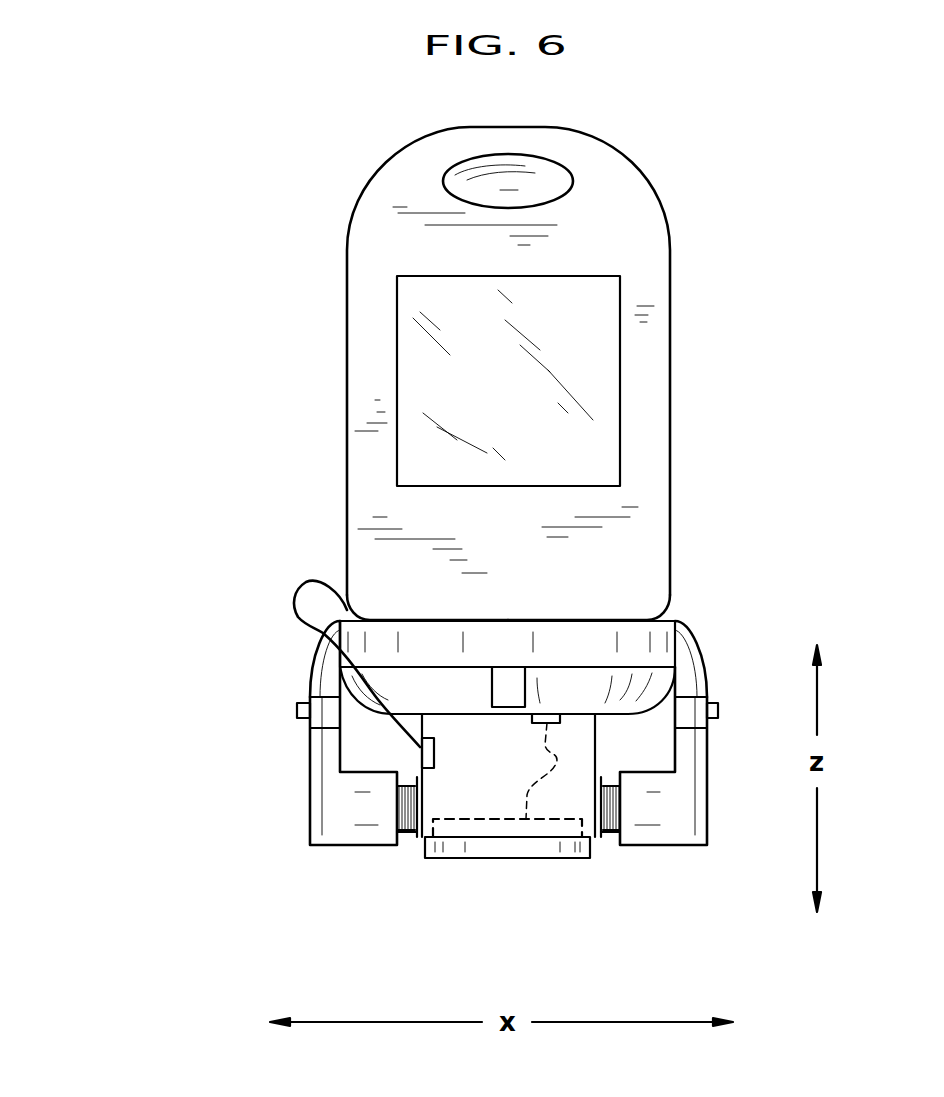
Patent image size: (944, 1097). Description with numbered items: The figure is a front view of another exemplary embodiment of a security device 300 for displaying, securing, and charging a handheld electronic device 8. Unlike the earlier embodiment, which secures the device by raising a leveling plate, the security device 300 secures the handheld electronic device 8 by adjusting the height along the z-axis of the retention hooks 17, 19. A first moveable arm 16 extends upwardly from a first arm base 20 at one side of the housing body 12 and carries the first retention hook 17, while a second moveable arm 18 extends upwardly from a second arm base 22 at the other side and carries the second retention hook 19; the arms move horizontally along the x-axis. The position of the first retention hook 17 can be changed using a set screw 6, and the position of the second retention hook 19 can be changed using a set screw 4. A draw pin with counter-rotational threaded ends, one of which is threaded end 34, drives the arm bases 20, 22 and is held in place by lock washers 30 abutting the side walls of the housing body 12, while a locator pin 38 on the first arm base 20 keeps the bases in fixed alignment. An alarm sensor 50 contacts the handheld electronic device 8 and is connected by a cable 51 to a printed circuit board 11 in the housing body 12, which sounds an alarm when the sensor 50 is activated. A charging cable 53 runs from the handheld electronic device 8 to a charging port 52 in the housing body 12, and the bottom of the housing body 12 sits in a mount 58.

The security device 300 is at (170, 758).
The handheld electronic device 8 is at (362, 335).
The first retention hook 17 is at (366, 620).
The second retention hook 19 is at (643, 619).
The charging cable 53 is at (302, 590).
The housing body 12 is at (488, 718).
The first moveable arm 16 is at (312, 662).
The second moveable arm 18 is at (692, 657).
The set screw 6 is at (298, 710).
The set screw 4 is at (712, 700).
The first arm base 20 is at (305, 822).
The second arm base 22 is at (712, 820).
The charging port 52 is at (436, 752).
The alarm sensor 50 is at (548, 714).
The cable 51 is at (549, 771).
The lock washers 30 is at (412, 775).
The locator pin 38 is at (406, 832).
The threaded end 34 is at (603, 834).
The printed circuit board 11 is at (496, 818).
The mount 58 is at (503, 858).